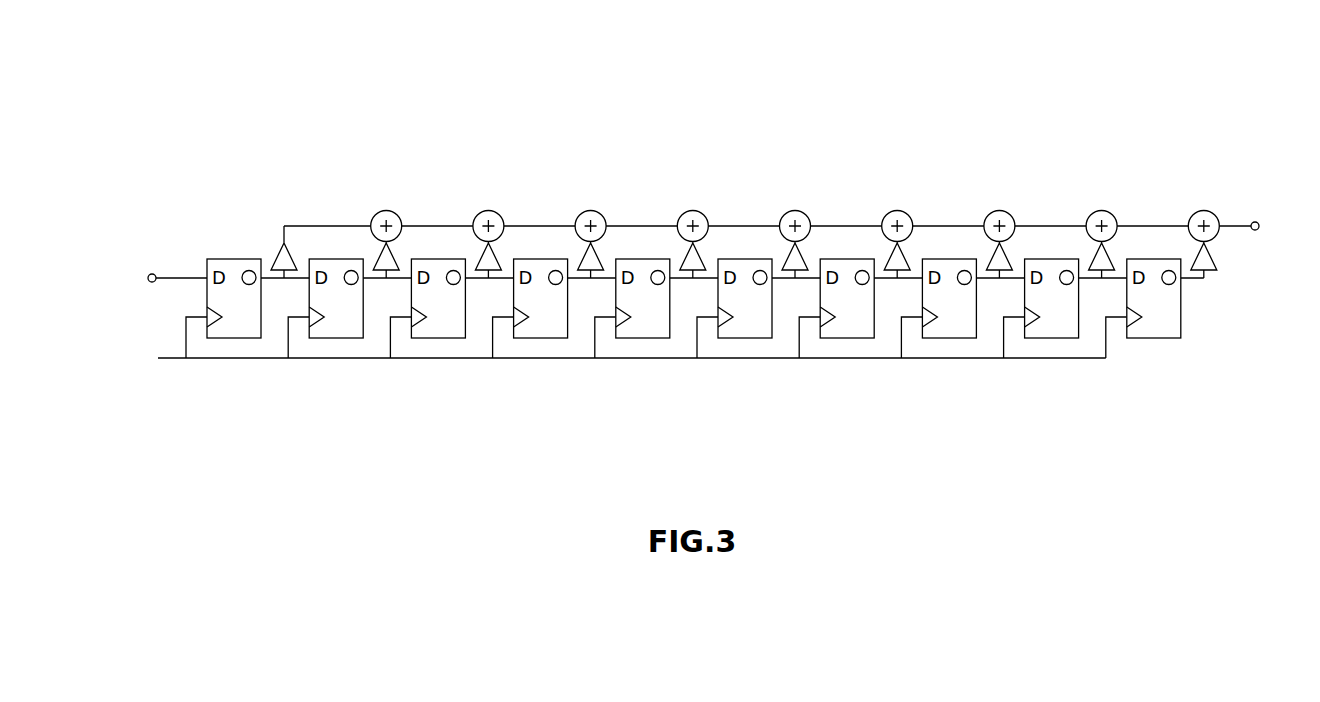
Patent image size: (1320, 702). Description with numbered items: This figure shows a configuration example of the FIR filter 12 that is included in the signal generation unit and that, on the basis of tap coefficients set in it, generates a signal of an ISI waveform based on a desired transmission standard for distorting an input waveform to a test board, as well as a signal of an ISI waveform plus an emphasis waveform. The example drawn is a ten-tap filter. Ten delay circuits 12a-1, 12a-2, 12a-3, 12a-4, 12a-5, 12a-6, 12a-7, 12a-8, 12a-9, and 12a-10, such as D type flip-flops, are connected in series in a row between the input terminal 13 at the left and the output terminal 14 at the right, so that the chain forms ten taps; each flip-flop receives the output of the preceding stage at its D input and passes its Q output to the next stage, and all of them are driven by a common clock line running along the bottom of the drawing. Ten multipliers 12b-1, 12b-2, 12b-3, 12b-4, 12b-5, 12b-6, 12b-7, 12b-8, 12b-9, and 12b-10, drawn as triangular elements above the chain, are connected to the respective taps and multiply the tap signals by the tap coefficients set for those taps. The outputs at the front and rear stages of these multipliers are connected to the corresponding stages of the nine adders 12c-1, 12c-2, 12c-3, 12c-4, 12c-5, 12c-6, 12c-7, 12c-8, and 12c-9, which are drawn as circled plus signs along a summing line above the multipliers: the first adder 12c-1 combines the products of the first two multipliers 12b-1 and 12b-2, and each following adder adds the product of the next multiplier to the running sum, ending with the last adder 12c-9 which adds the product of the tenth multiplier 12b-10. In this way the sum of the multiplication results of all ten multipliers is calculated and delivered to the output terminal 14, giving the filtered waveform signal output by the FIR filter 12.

The FIR filter 12 is at (686, 88).
The input terminal 13 is at (152, 273).
The output terminal 14 is at (1255, 231).
The delay circuit 12a-1 is at (232, 338).
The delay circuit 12a-2 is at (334, 338).
The delay circuit 12a-3 is at (436, 338).
The delay circuit 12a-4 is at (539, 338).
The delay circuit 12a-5 is at (641, 338).
The delay circuit 12a-6 is at (743, 338).
The delay circuit 12a-7 is at (845, 338).
The delay circuit 12a-8 is at (947, 338).
The delay circuit 12a-9 is at (1050, 338).
The delay circuit 12a-10 is at (1152, 338).
The multiplier 12b-1 is at (280, 252).
The multiplier 12b-2 is at (382, 252).
The multiplier 12b-3 is at (484, 252).
The multiplier 12b-4 is at (587, 252).
The multiplier 12b-5 is at (689, 252).
The multiplier 12b-6 is at (791, 252).
The multiplier 12b-7 is at (893, 252).
The multiplier 12b-8 is at (995, 252).
The multiplier 12b-9 is at (1098, 252).
The multiplier 12b-10 is at (1200, 252).
The adder 12c-1 is at (386, 210).
The adder 12c-2 is at (488, 210).
The adder 12c-3 is at (591, 210).
The adder 12c-4 is at (693, 210).
The adder 12c-5 is at (795, 210).
The adder 12c-6 is at (897, 210).
The adder 12c-7 is at (999, 210).
The adder 12c-8 is at (1102, 210).
The adder 12c-9 is at (1204, 210).